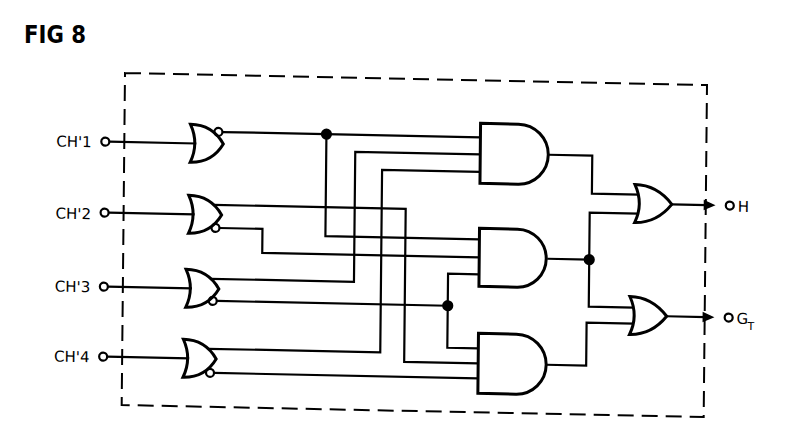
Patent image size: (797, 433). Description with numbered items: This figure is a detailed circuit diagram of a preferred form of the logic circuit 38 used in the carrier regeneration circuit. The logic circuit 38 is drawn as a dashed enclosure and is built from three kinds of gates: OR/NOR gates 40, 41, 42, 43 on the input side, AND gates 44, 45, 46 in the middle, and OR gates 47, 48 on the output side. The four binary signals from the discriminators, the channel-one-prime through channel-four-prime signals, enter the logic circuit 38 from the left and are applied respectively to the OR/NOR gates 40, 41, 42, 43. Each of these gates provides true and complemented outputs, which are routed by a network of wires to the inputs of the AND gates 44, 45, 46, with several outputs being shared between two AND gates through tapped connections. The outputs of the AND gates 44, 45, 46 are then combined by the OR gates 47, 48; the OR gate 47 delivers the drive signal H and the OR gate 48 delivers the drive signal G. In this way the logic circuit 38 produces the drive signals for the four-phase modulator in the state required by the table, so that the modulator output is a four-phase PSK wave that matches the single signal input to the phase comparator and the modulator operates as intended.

The logic circuit 38 is at (645, 73).
The OR/NOR gate 40 is at (204, 124).
The OR/NOR gate 41 is at (199, 195).
The OR/NOR gate 42 is at (204, 269).
The OR/NOR gate 43 is at (201, 339).
The AND gate 44 is at (536, 122).
The AND gate 45 is at (518, 220).
The AND gate 46 is at (522, 325).
The OR gate 47 is at (650, 174).
The OR gate 48 is at (648, 286).